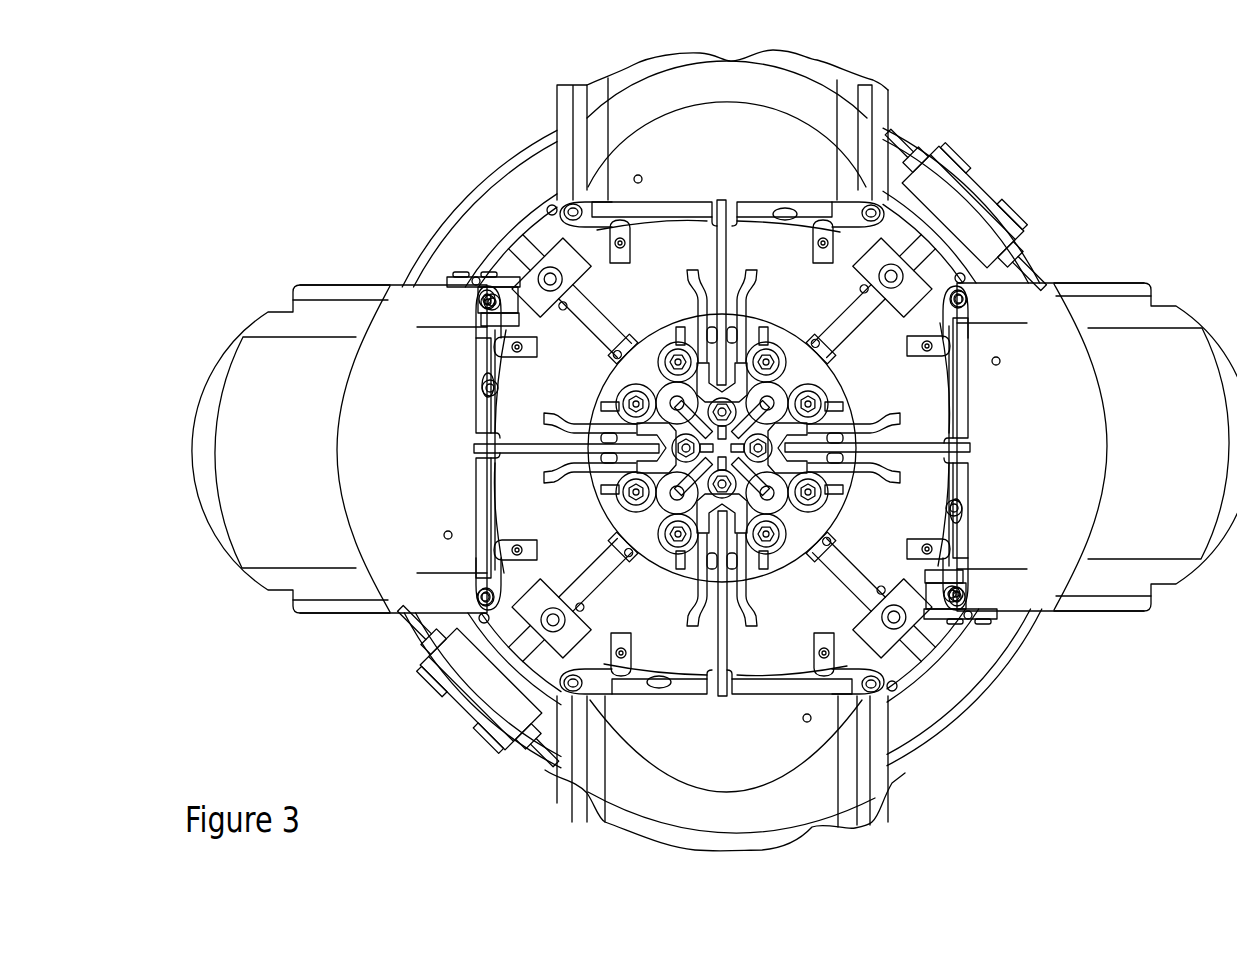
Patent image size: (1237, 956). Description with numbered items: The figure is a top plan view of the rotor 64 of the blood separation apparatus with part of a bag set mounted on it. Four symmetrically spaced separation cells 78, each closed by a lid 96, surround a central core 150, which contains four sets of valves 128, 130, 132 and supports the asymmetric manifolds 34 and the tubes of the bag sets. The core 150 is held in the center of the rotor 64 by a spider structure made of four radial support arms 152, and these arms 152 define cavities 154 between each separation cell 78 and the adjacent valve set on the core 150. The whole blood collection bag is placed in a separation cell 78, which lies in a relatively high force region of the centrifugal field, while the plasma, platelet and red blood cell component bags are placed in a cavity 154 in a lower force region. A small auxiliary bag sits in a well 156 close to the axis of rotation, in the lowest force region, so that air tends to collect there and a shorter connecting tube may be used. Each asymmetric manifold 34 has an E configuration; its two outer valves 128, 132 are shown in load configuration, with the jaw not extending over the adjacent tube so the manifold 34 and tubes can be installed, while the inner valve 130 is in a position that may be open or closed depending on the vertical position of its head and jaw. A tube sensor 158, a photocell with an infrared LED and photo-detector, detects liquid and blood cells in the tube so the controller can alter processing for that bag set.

The rotor 64 is at (304, 140).
The separation cell 78 is at (531, 109).
The lid 96 is at (740, 178).
The outer valve 128 is at (818, 398).
The inner valve 130 is at (768, 492).
The outer valve 132 is at (822, 498).
The asymmetric manifold 34 is at (702, 392).
The central core 150 is at (652, 320).
The radial support arm 152 is at (849, 313).
The cavity 154 is at (784, 257).
The well 156 is at (670, 507).
The tube sensor 158 is at (731, 568).